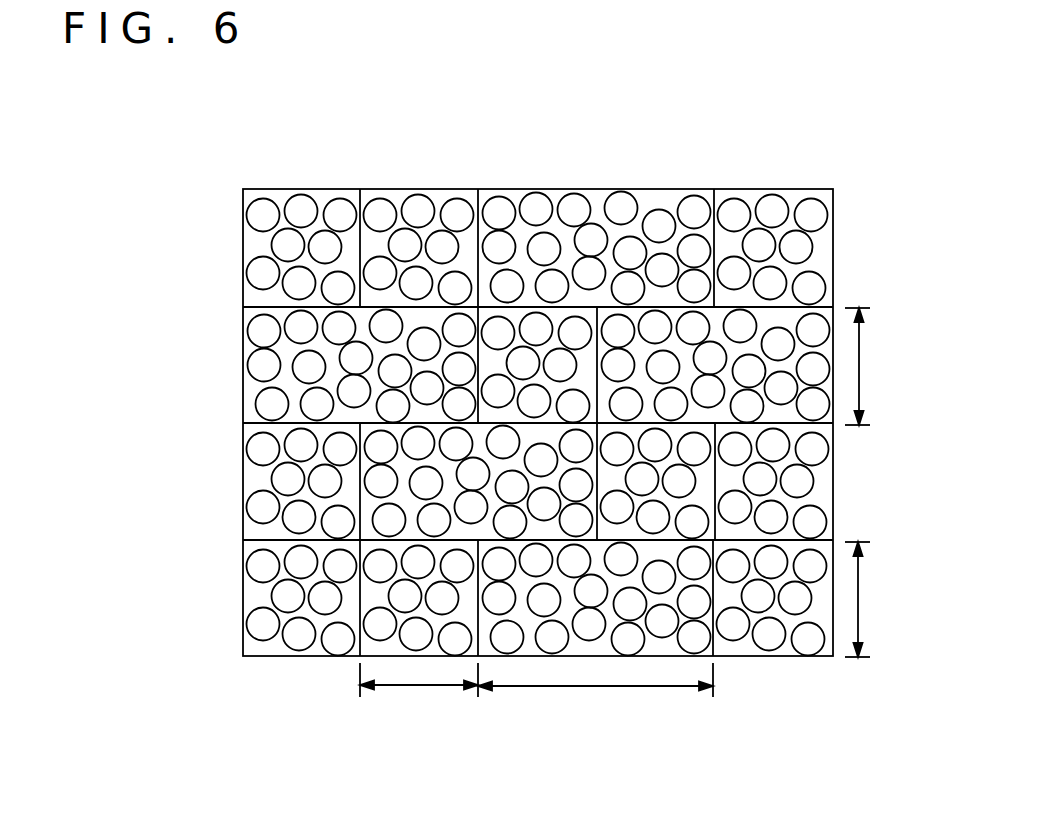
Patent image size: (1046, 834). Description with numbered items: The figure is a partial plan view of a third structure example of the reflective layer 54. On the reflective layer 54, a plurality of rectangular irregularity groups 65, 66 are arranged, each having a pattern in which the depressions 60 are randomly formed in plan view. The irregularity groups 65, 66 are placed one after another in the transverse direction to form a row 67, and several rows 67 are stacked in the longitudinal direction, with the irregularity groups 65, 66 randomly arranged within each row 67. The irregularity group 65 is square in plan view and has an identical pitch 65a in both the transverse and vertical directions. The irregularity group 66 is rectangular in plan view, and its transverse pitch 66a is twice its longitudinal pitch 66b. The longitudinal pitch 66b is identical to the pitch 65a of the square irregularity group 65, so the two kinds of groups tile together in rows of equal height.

The reflective layer 54 is at (852, 226).
The depressions 60 is at (284, 242).
The irregularity group 65 is at (243, 247).
The irregularity group 66 is at (243, 385).
The row 67 is at (133, 573).
The pitch 65a is at (638, 631).
The transverse pitch 66a is at (595, 691).
The longitudinal pitch 66b is at (882, 366).